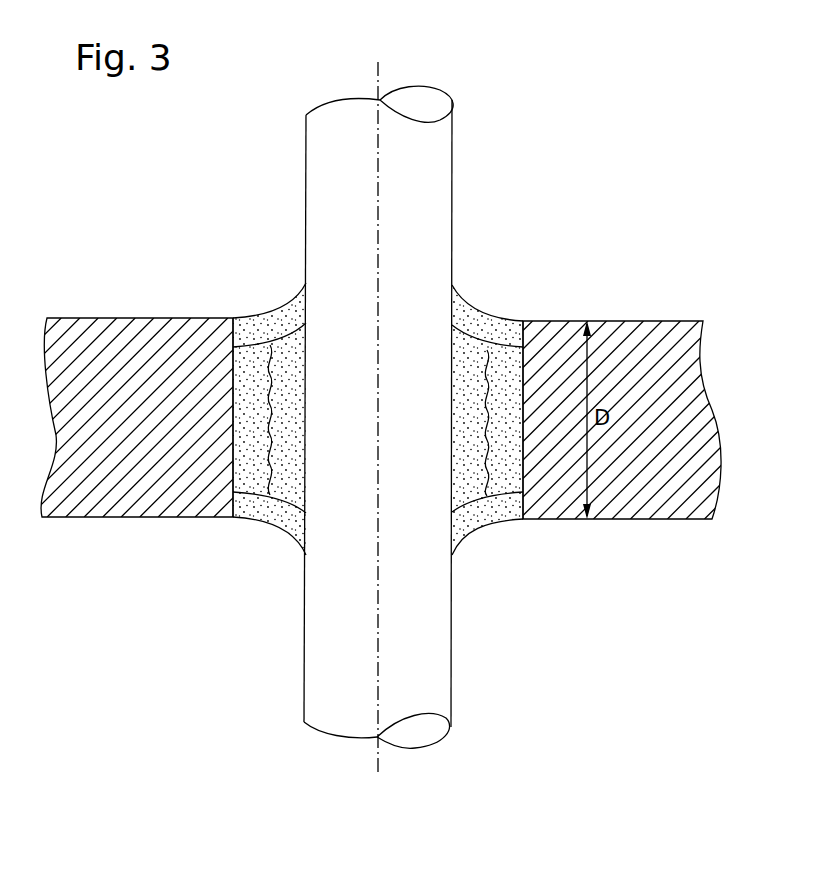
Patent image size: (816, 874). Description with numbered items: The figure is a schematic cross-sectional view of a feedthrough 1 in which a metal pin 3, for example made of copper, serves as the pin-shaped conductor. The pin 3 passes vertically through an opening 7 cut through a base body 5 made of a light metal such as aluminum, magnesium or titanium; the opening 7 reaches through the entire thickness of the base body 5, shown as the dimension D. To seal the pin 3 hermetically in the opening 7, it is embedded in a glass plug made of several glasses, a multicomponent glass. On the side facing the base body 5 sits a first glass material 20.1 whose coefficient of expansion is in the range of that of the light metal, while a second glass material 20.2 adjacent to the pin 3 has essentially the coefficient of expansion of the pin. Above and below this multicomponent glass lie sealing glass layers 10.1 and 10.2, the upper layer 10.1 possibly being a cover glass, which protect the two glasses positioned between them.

The feedthrough 1 is at (417, 412).
The metal pin 3 is at (432, 139).
The base body 5 is at (675, 382).
The opening 7 is at (371, 414).
The sealing glass layer 10.1 is at (268, 335).
The sealing glass layer 10.2 is at (250, 520).
The first glass material 20.1 is at (245, 355).
The second glass material 20.2 is at (290, 518).